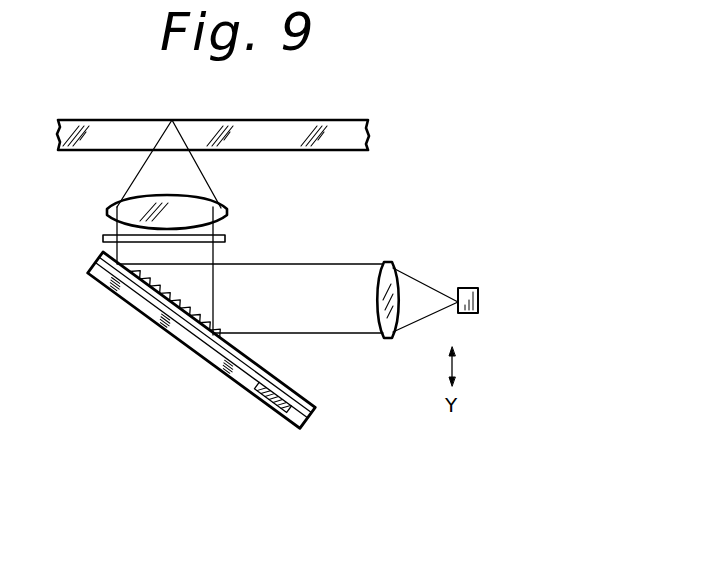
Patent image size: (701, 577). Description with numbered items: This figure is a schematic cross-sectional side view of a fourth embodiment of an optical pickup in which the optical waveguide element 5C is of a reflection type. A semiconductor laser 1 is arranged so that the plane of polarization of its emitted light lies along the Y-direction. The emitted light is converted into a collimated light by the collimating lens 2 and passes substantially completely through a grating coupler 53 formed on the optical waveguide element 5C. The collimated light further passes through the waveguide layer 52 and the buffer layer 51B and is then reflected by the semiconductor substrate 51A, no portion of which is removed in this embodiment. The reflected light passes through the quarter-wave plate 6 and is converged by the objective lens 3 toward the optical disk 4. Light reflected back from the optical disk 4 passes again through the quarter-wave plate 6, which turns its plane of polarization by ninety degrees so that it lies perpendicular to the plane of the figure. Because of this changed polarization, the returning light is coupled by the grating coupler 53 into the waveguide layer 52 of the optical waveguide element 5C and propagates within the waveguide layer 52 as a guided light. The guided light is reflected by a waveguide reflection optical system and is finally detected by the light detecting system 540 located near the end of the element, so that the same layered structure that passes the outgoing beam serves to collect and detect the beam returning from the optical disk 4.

The semiconductor laser 1 is at (468, 287).
The collimating lens 2 is at (393, 261).
The objective lens 3 is at (227, 213).
The optical disk 4 is at (315, 120).
The quarter-wave plate 6 is at (225, 238).
The optical waveguide element 5C is at (214, 352).
The semiconductor substrate 51A is at (233, 383).
The buffer layer 51B is at (205, 340).
The waveguide layer 52 is at (255, 364).
The grating coupler 53 is at (200, 316).
The light detecting system 540 is at (282, 406).